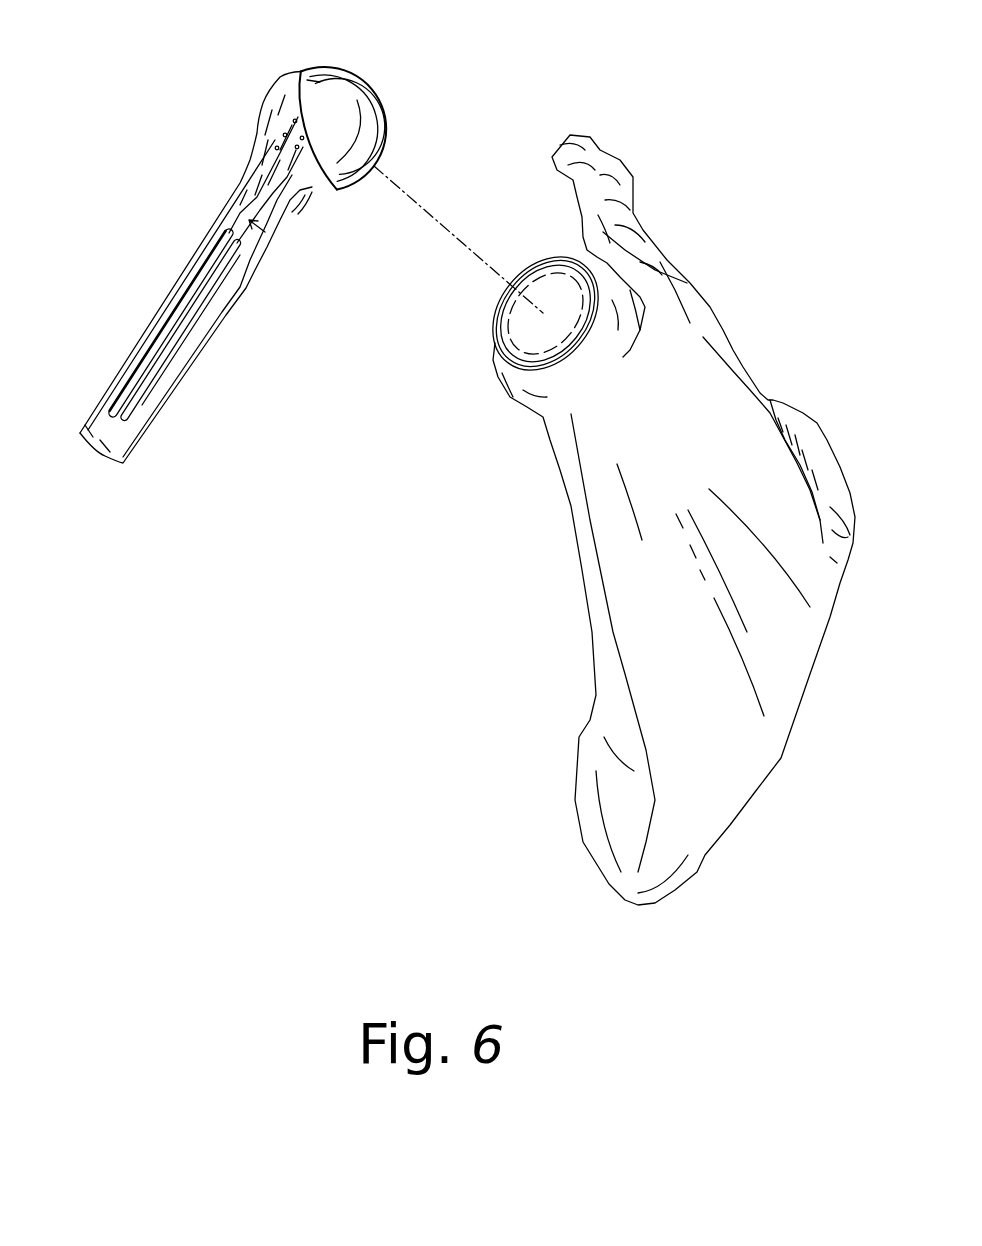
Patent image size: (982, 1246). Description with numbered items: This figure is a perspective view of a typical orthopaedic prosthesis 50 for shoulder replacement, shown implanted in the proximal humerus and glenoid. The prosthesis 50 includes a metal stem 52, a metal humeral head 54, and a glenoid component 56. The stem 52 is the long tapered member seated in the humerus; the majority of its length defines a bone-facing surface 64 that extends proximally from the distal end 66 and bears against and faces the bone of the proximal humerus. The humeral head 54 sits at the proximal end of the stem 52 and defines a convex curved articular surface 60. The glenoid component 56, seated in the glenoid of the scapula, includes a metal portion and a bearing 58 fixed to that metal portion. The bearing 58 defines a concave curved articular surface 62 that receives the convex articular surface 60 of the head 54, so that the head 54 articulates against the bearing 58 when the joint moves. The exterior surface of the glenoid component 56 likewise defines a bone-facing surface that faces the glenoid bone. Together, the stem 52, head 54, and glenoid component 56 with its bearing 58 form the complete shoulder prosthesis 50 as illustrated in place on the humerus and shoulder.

The orthopaedic prosthesis 50 is at (400, 108).
The metal stem 52 is at (275, 235).
The metal humeral head 54 is at (365, 140).
The glenoid component 56 is at (580, 343).
The bearing 58 is at (513, 330).
The convex curved articular surface 60 is at (363, 97).
The concave curved articular surface 62 is at (543, 315).
The bone-facing surface 64 is at (200, 282).
The distal end 66 is at (112, 412).